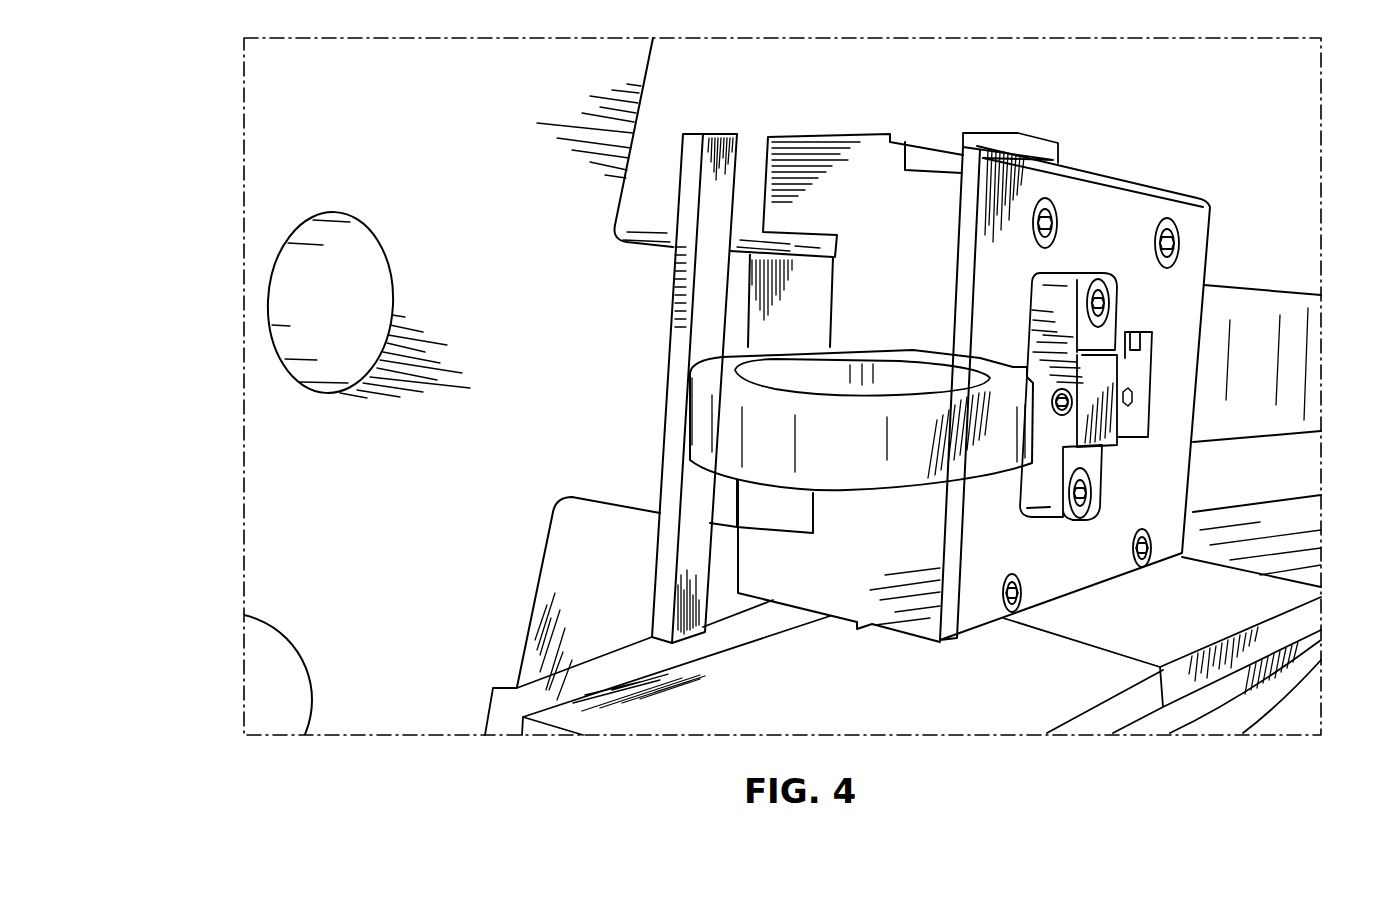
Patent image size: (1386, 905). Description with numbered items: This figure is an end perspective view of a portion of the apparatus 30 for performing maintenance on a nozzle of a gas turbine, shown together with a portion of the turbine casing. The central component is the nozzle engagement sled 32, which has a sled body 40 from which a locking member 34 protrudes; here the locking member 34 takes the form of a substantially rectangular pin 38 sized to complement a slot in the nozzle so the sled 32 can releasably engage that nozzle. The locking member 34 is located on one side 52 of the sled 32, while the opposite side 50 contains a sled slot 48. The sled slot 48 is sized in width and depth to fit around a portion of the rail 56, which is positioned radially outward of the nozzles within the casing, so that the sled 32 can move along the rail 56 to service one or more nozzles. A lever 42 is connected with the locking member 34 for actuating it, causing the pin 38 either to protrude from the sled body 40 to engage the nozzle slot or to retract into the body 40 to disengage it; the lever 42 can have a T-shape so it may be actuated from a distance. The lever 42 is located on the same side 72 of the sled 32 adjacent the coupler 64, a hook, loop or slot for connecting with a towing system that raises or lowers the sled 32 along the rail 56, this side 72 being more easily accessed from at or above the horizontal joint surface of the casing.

The apparatus 30 is at (225, 135).
The nozzle engagement sled 32 is at (1105, 130).
The locking member 34 is at (1150, 396).
The pin 38 is at (1137, 420).
The sled body 40 is at (1133, 208).
The lever 42 is at (683, 325).
The sled slot 48 is at (858, 248).
The side 50 is at (758, 135).
The side 52 is at (1097, 245).
The rail 56 is at (622, 438).
The coupler 64 is at (849, 457).
The side 72 is at (894, 307).